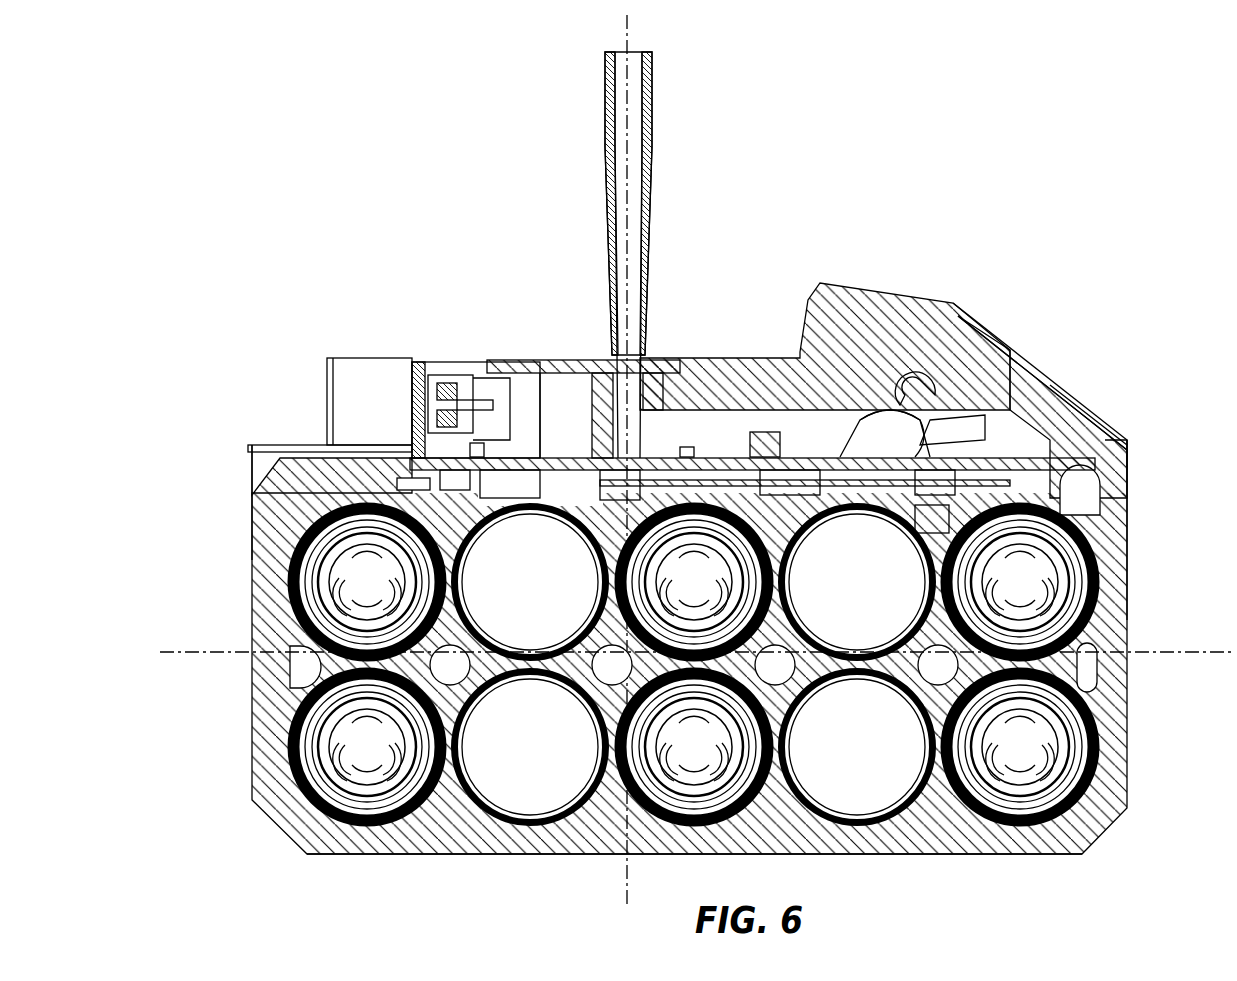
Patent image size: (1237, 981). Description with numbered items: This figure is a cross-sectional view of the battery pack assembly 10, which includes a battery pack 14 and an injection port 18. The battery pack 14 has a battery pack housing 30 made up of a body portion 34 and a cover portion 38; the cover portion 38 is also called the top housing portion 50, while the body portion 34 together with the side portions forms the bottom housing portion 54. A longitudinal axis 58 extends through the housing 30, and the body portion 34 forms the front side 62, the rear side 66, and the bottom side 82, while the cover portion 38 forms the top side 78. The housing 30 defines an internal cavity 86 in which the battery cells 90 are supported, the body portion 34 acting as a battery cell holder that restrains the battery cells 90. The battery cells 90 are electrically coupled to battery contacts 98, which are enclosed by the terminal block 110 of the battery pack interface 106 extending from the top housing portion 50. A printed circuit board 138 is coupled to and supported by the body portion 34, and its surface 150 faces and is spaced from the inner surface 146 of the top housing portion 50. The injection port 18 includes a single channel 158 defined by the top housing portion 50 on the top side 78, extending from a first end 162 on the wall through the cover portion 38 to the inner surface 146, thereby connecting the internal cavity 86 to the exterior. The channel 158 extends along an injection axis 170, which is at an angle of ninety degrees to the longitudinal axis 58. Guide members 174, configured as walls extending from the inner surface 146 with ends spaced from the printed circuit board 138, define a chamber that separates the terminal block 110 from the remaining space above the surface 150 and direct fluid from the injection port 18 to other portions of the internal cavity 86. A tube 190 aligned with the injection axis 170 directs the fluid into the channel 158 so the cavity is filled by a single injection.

The battery pack assembly 10 is at (249, 137).
The battery pack 14 is at (326, 160).
The battery pack housing 30 is at (270, 300).
The body portion 34 is at (935, 822).
The cover portion 38 is at (912, 290).
The top housing portion 50 is at (1055, 305).
The bottom housing portion 54 is at (1152, 806).
The longitudinal axis 58 is at (226, 646).
The front side 62 is at (250, 560).
The rear side 66 is at (1128, 612).
The top side 78 is at (790, 400).
The bottom side 82 is at (462, 855).
The internal cavity 86 is at (1055, 480).
The battery cells 90 is at (355, 595).
The battery contacts 98 is at (430, 395).
The battery pack interface 106 is at (317, 393).
The terminal block 110 is at (432, 357).
The printed circuit board 138 is at (815, 450).
The inner surface 146 is at (478, 445).
The surface 150 is at (770, 432).
The channel 158 is at (620, 400).
The first end 162 is at (622, 362).
The injection port 18 is at (668, 450).
The injection axis 170 is at (640, 105).
The guide members 174 is at (585, 447).
The tube 190 is at (651, 175).